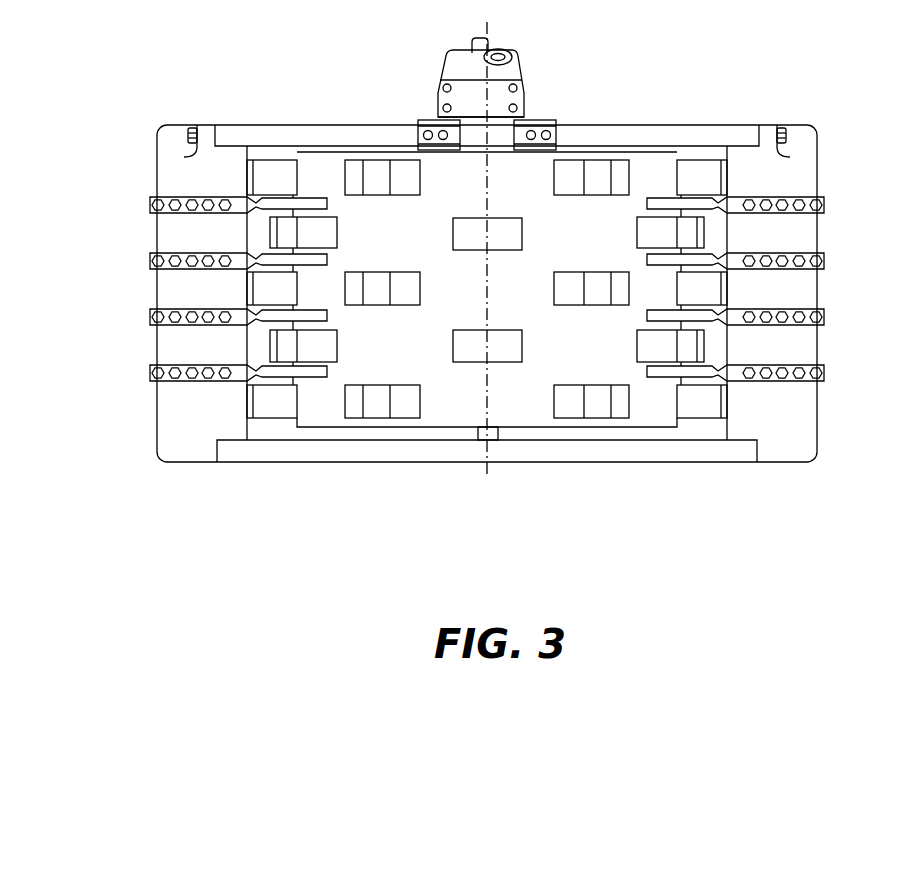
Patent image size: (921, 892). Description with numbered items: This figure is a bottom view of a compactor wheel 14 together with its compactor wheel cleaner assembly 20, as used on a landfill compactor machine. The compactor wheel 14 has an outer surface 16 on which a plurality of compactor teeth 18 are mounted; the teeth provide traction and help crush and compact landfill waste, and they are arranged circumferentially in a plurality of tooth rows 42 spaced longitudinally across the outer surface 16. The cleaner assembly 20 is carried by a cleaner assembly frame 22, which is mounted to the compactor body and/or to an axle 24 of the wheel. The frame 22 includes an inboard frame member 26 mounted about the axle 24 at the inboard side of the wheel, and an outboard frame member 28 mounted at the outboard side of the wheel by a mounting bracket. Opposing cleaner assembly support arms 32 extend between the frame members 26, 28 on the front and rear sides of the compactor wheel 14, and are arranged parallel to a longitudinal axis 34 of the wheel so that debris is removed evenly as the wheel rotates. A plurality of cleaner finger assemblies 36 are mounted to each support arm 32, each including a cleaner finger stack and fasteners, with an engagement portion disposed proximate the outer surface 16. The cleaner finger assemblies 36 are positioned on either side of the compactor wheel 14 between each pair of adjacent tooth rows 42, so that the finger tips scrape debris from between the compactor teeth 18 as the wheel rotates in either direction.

The compactor wheel 14 is at (594, 152).
The outer surface 16 is at (452, 418).
The compactor teeth 18 is at (638, 232).
The compactor wheel cleaner assembly 20 is at (154, 120).
The cleaner assembly frame 22 is at (196, 125).
The axle 24 is at (503, 73).
The inboard frame member 26 is at (239, 127).
The outboard frame member 28 is at (660, 451).
The cleaner assembly support arms 32 is at (800, 128).
The longitudinal axis 34 is at (487, 28).
The cleaner finger assemblies 36 is at (148, 260).
The tooth rows 42 is at (175, 170).